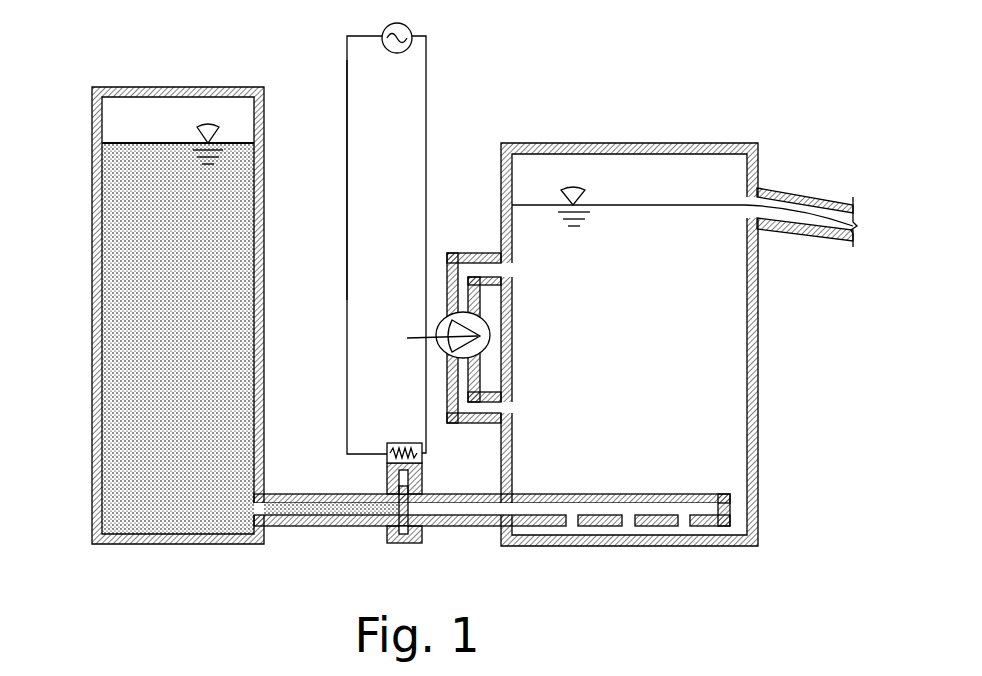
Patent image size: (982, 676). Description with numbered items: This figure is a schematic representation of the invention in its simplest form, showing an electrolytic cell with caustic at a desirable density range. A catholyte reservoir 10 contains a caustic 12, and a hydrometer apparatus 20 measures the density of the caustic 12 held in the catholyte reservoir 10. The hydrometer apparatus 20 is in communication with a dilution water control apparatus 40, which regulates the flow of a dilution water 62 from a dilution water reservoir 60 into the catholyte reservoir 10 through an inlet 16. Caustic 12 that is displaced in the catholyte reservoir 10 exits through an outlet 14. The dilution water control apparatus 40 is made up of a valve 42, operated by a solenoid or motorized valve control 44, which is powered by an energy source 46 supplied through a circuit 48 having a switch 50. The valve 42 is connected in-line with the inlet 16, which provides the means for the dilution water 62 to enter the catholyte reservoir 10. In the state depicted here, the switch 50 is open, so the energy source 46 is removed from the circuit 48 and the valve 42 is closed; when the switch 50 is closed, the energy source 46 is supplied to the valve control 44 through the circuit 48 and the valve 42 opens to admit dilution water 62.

The catholyte reservoir 10 is at (758, 475).
The caustic 12 is at (640, 380).
The outlet 14 is at (790, 193).
The inlet 16 is at (713, 524).
The hydrometer apparatus 20 is at (437, 320).
The dilution water control apparatus 40 is at (328, 47).
The valve 42 is at (423, 533).
The valve control 44 is at (387, 466).
The energy source 46 is at (412, 30).
The circuit 48 is at (345, 108).
The switch 50 is at (420, 329).
The dilution water reservoir 60 is at (93, 264).
The dilution water 62 is at (155, 345).